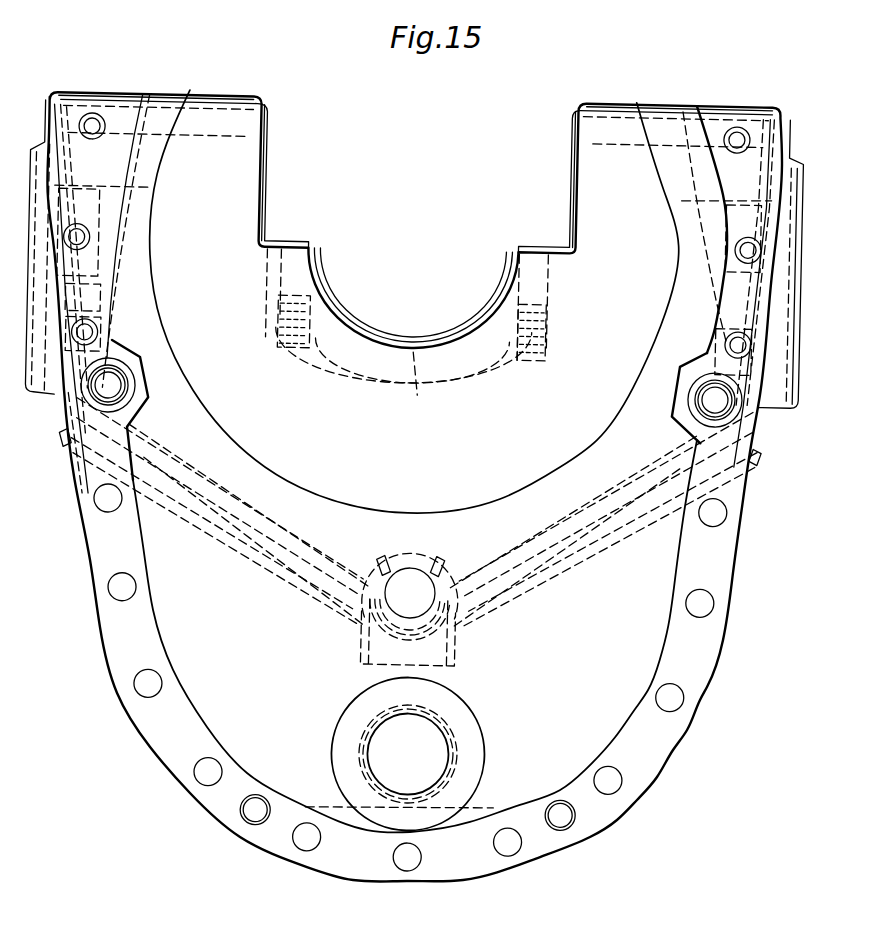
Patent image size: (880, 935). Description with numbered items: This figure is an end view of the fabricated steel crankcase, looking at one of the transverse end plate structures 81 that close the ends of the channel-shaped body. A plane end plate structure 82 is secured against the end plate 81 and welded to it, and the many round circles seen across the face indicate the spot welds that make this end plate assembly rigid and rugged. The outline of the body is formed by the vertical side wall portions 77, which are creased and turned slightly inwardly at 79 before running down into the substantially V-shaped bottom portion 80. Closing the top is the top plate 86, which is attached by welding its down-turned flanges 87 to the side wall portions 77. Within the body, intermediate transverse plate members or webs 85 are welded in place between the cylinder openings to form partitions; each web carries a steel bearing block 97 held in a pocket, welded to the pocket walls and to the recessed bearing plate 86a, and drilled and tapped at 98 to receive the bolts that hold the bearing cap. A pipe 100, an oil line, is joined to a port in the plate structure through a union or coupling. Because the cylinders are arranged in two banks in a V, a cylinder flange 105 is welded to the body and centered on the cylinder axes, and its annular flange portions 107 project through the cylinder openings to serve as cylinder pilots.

The vertical side wall portions 77 is at (55, 137).
The inwardly turned portion 79 is at (72, 403).
The V-shaped bottom portion 80 is at (368, 615).
The transverse end plate structure 81 is at (160, 546).
The plane end plate structure 82 is at (158, 162).
The intermediate transverse plate members or webs 85 is at (413, 303).
The top plate 86 is at (104, 94).
The recessed bearing plate 86a is at (268, 124).
The down-turned flanges 87 is at (44, 110).
The steel bearing block 97 is at (557, 273).
The drilled and tapped holes 98 is at (278, 320).
The pipe 100 is at (667, 213).
The cylinder flange 105 is at (70, 454).
The annular flange portions 107 is at (447, 565).